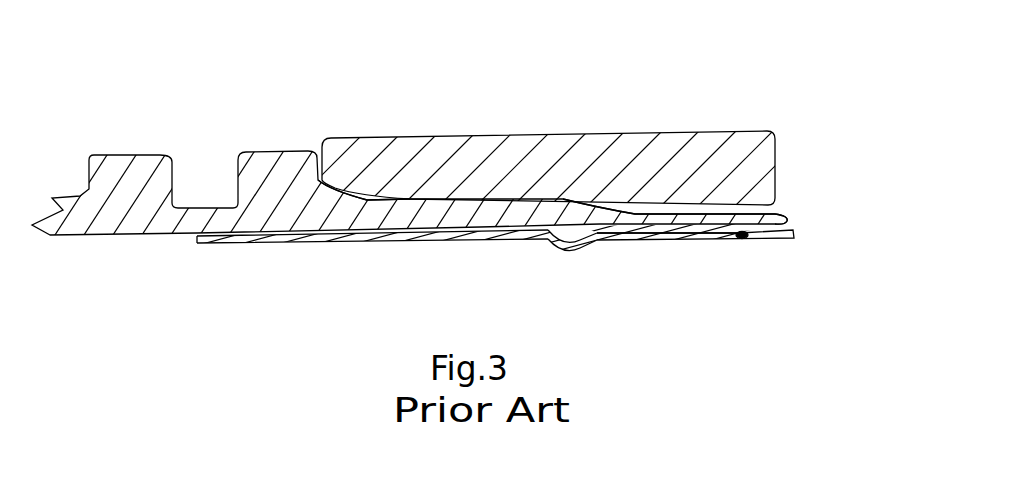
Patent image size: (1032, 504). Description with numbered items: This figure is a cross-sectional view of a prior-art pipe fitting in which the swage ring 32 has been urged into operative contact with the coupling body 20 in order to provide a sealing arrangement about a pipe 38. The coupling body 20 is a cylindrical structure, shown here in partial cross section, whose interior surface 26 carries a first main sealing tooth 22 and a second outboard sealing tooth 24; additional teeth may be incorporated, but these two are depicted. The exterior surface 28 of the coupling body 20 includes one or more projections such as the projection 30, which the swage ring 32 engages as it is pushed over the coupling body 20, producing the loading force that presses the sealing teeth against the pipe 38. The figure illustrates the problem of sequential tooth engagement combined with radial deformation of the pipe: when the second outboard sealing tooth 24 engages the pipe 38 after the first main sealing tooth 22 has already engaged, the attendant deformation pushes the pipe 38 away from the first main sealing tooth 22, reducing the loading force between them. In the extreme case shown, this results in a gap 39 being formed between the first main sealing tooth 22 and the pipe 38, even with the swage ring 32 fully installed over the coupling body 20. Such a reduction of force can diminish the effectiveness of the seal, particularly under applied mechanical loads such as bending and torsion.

The coupling body 20 is at (584, 62).
The first main sealing tooth 22 is at (455, 242).
The second outboard sealing tooth 24 is at (742, 237).
The interior surface 26 is at (690, 225).
The exterior surface 28 is at (663, 210).
The projection 30 is at (563, 198).
The swage ring 32 is at (718, 128).
The pipe 38 is at (790, 228).
The gap 39 is at (560, 250).